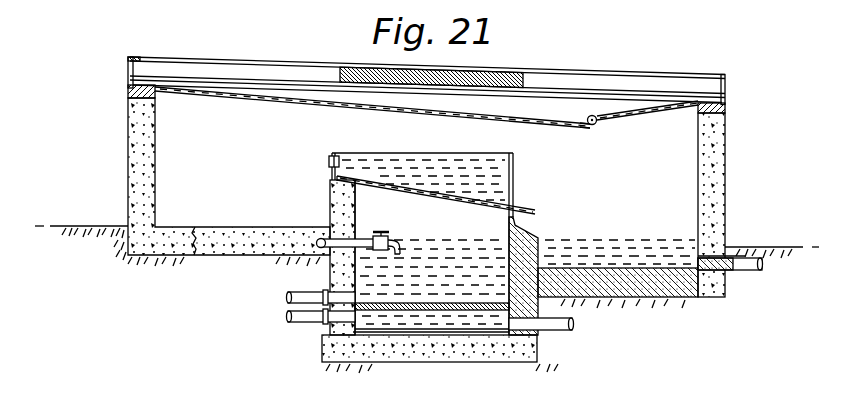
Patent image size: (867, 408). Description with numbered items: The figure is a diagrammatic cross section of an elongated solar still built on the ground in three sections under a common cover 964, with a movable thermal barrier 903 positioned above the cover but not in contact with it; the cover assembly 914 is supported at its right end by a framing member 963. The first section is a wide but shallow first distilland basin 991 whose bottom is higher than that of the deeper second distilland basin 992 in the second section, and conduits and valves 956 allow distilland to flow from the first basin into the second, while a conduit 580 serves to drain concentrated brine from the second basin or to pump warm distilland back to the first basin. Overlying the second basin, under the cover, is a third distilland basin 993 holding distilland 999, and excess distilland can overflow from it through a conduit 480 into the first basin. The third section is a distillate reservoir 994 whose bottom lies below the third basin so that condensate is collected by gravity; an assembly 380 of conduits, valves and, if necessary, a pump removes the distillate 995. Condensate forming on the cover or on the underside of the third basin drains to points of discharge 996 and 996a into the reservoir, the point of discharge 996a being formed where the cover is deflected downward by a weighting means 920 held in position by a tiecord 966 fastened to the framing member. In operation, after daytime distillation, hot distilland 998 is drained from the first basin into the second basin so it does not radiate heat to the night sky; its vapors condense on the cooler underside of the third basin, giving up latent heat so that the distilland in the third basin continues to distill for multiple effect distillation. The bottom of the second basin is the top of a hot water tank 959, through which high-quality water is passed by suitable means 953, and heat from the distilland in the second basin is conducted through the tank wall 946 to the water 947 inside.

The cover 914 is at (277, 82).
The thermal barrier 903 is at (508, 80).
The tiecord 966 is at (594, 116).
The framing member 963 is at (725, 105).
The cover 964 is at (247, 100).
The conduit 480 is at (320, 159).
The weighting means 920 is at (590, 127).
The point of discharge 996a is at (595, 126).
The distilland 999 is at (337, 179).
The third distilland basin 993 is at (513, 193).
The point of discharge 996 is at (536, 214).
The distillate 995 is at (660, 252).
The hot distilland 998 is at (445, 268).
The conduits and valves 956 is at (325, 238).
The first distilland basin 991 is at (200, 256).
The conduit 580 is at (303, 293).
The means for passing water 953 is at (300, 318).
The water 947 is at (380, 330).
The wall 946 is at (430, 311).
The hot water tank 959 is at (463, 337).
The second distilland basin 992 is at (536, 297).
The distillate reservoir 994 is at (680, 275).
The assembly 380 is at (748, 264).